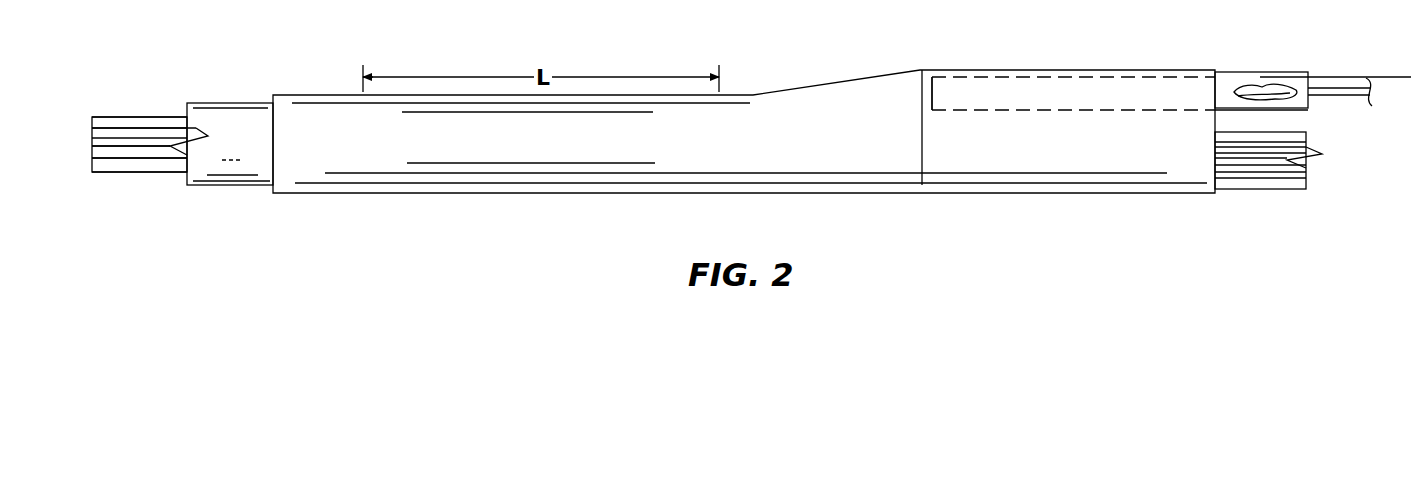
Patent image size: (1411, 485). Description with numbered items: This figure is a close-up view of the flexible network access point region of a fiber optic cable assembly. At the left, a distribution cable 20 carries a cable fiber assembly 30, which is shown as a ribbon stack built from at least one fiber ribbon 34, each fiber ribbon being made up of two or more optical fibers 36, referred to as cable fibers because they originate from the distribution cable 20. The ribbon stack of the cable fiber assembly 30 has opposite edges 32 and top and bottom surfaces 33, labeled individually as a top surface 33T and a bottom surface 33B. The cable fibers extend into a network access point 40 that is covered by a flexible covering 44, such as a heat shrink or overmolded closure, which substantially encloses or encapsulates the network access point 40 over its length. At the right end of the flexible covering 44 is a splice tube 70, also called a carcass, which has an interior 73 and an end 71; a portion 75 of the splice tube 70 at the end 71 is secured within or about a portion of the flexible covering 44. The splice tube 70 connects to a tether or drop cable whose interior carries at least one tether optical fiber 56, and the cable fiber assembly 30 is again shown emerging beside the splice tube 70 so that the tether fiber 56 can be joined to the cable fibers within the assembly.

The distribution cable 20 is at (228, 186).
The cable fiber assembly 30 is at (177, 88).
The opposite edges 32 is at (117, 147).
The top and bottom surfaces 33 is at (1262, 128).
The top surface 33T is at (157, 117).
The bottom surface 33B is at (160, 173).
The fiber ribbon 34 is at (132, 178).
The optical fibers 36 is at (132, 122).
The network access point 40 is at (470, 195).
The flexible covering 44 is at (885, 153).
The optical fiber 56 is at (1340, 88).
The splice tube 70 is at (1234, 72).
The end 71 is at (930, 97).
The interior 73 is at (1281, 85).
The portion 75 is at (1108, 86).